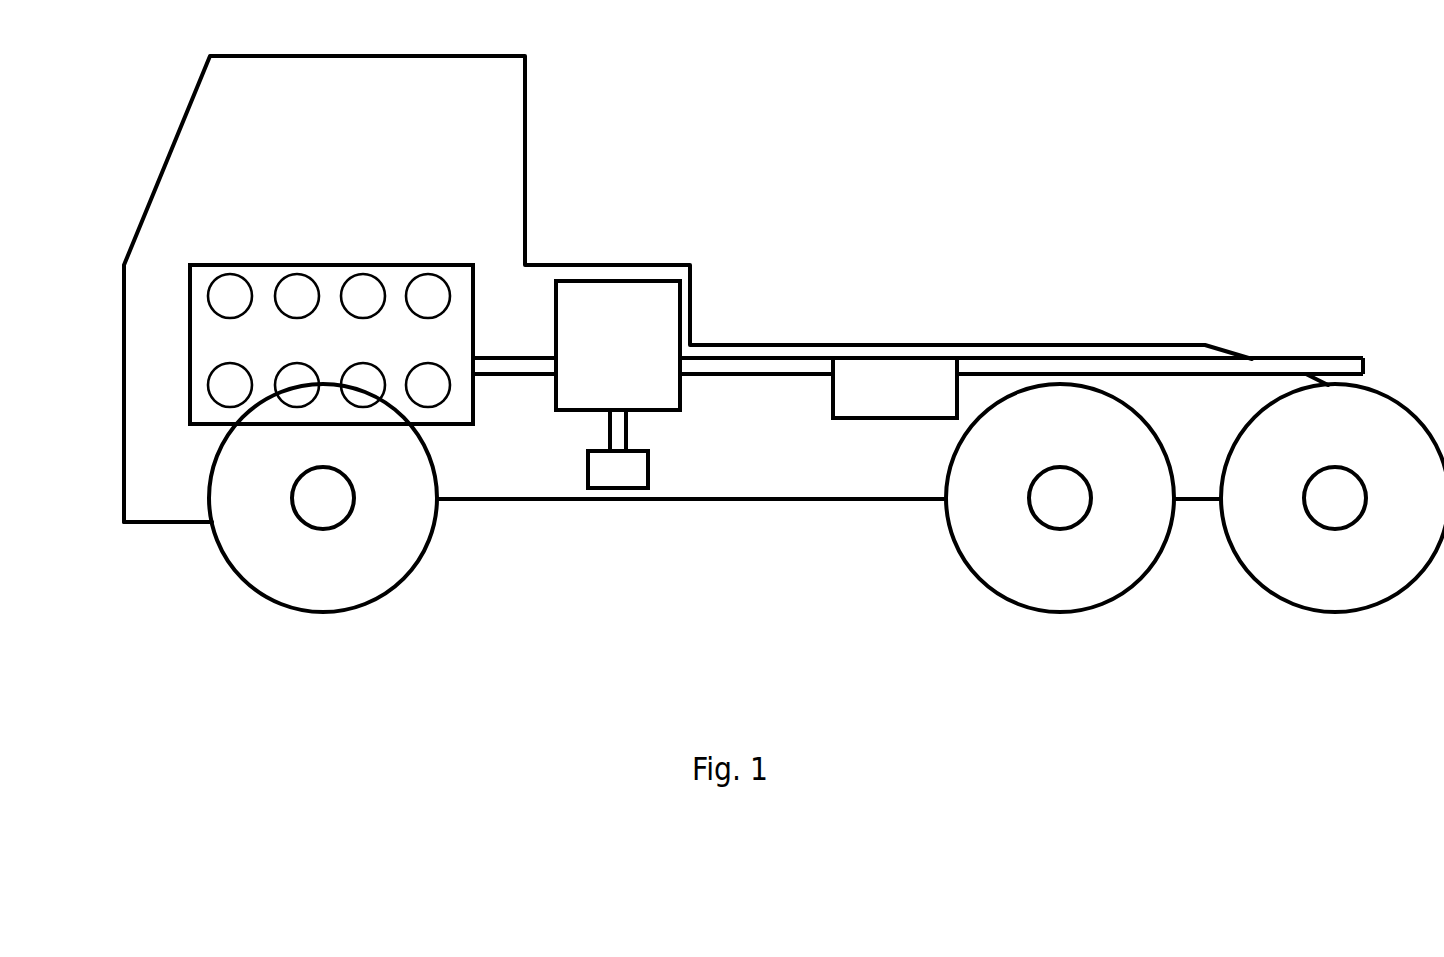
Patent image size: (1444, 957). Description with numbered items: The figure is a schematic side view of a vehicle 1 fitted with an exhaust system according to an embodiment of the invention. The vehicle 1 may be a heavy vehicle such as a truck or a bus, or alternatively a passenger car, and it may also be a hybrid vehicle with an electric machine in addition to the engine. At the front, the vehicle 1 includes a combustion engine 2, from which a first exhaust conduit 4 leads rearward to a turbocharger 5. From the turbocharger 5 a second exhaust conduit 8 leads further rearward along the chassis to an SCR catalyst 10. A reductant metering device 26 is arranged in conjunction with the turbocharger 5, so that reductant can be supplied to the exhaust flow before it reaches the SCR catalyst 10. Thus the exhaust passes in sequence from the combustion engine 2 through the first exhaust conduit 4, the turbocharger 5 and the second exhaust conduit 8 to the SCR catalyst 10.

The vehicle 1 is at (784, 322).
The combustion engine 2 is at (323, 359).
The first exhaust conduit 4 is at (513, 364).
The turbocharger 5 is at (609, 360).
The frame rail 8 is at (768, 367).
The SCR catalyst 10 is at (881, 399).
The reductant metering device 26 is at (603, 482).